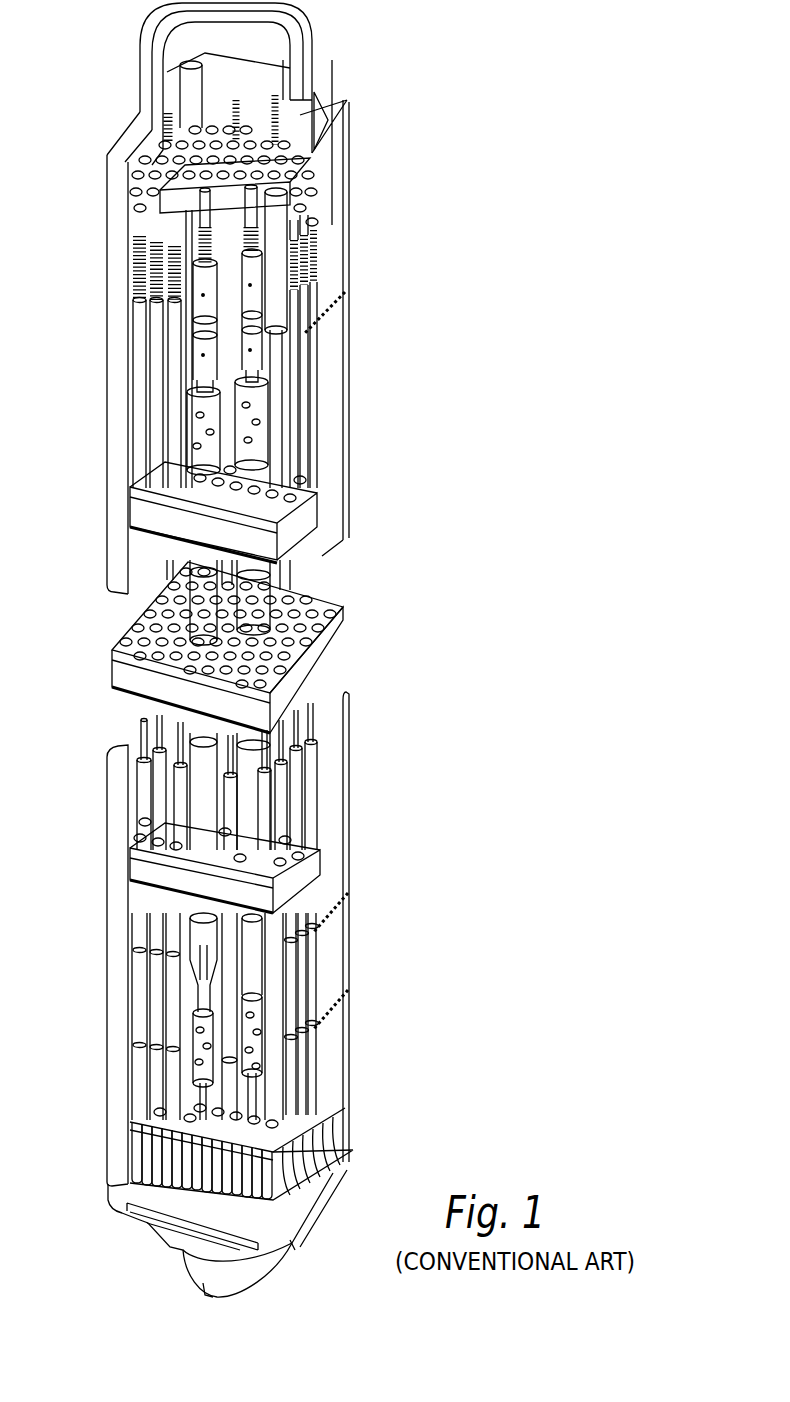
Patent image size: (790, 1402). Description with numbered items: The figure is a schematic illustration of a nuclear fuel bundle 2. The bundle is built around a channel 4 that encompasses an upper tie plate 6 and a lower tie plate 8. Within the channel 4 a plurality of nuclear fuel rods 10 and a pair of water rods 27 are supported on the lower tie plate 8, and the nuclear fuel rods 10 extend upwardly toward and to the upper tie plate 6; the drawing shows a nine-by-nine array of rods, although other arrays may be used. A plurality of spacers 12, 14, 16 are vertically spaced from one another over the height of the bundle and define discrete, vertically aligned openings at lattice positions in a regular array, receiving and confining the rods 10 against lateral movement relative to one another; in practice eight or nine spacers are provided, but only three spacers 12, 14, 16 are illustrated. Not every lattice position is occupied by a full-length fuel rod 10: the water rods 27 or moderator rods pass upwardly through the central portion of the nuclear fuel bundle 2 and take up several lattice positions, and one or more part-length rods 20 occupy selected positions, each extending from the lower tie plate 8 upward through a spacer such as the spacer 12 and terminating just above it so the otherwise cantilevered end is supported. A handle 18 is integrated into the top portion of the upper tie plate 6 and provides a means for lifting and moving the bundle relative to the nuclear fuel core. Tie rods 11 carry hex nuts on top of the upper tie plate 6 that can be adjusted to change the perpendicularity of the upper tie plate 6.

The nuclear fuel bundle 2 is at (433, 258).
The channel 4 is at (335, 405).
The upper tie plate 6 is at (218, 207).
The lower tie plate 8 is at (230, 1212).
The nuclear fuel rods 10 is at (170, 430).
The tie rods 11 is at (245, 100).
The spacer 12 is at (295, 880).
The spacer 14 is at (325, 653).
The spacer 16 is at (150, 510).
The handle 18 is at (303, 14).
The part-length rods 20 is at (283, 816).
The water rods 27 is at (258, 608).